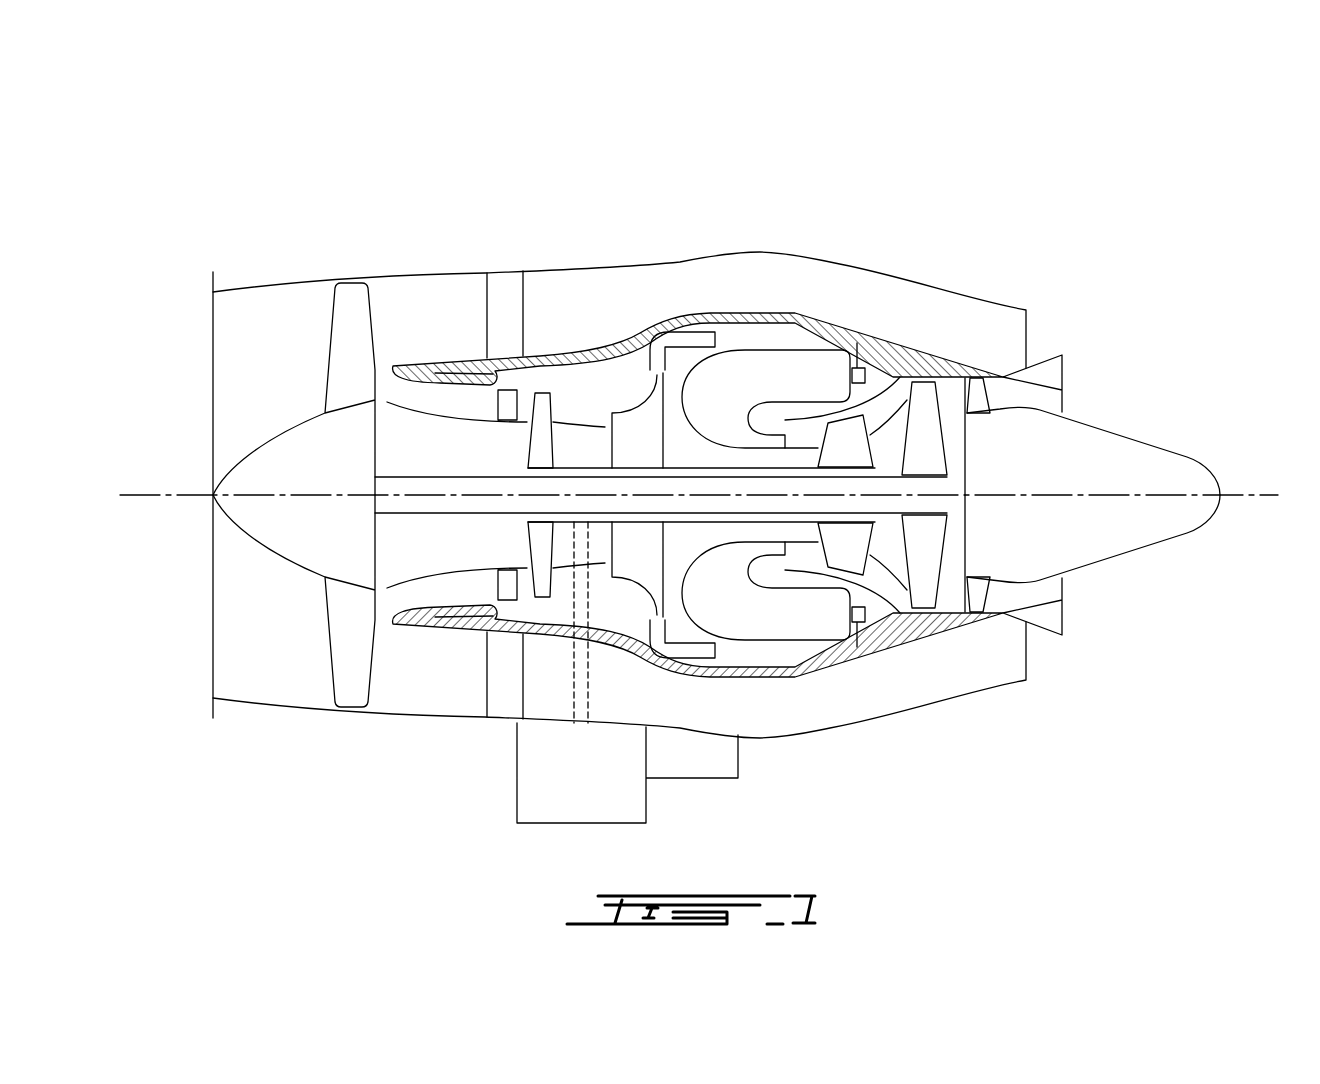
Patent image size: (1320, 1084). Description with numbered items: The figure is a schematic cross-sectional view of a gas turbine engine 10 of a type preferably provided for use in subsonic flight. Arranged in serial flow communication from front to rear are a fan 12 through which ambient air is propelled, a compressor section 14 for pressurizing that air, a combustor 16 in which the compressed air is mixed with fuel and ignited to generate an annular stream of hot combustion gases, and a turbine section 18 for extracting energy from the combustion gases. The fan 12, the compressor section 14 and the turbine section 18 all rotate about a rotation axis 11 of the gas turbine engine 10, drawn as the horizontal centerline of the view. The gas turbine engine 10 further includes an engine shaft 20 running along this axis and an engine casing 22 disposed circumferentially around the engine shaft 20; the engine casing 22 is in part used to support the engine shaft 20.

The gas turbine engine 10 is at (906, 174).
The rotation axis 11 is at (1252, 495).
The fan 12 is at (347, 633).
The compressor section 14 is at (573, 407).
The combustor 16 is at (762, 377).
The turbine section 18 is at (886, 553).
The engine shaft 20 is at (593, 467).
The engine casing 22 is at (917, 348).